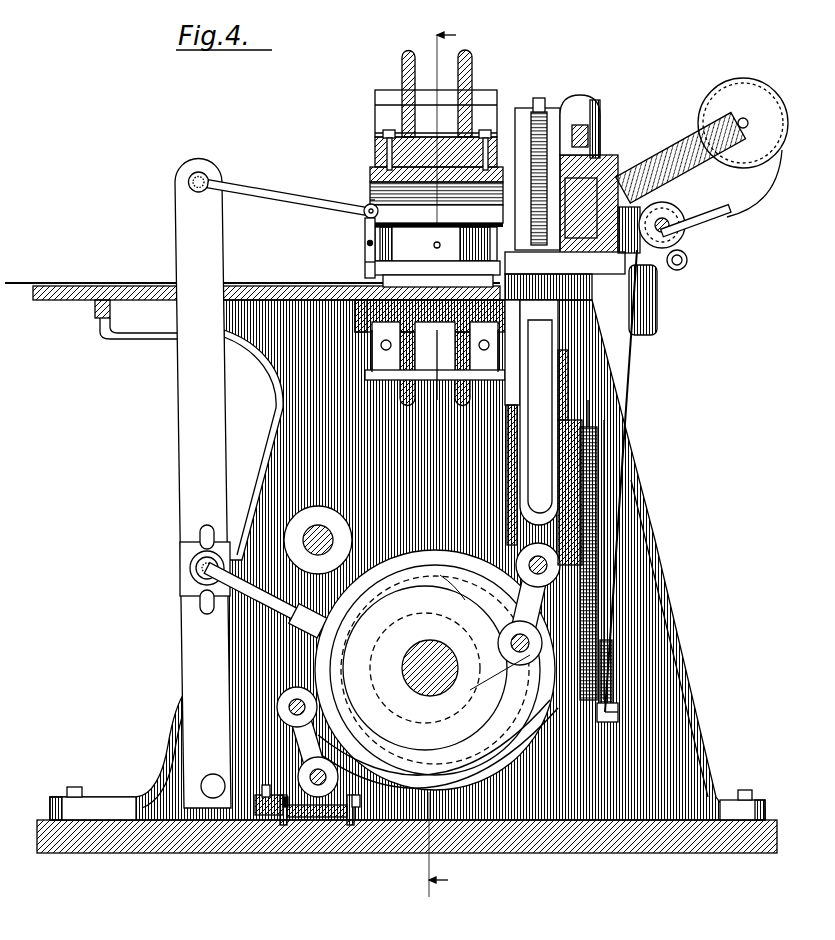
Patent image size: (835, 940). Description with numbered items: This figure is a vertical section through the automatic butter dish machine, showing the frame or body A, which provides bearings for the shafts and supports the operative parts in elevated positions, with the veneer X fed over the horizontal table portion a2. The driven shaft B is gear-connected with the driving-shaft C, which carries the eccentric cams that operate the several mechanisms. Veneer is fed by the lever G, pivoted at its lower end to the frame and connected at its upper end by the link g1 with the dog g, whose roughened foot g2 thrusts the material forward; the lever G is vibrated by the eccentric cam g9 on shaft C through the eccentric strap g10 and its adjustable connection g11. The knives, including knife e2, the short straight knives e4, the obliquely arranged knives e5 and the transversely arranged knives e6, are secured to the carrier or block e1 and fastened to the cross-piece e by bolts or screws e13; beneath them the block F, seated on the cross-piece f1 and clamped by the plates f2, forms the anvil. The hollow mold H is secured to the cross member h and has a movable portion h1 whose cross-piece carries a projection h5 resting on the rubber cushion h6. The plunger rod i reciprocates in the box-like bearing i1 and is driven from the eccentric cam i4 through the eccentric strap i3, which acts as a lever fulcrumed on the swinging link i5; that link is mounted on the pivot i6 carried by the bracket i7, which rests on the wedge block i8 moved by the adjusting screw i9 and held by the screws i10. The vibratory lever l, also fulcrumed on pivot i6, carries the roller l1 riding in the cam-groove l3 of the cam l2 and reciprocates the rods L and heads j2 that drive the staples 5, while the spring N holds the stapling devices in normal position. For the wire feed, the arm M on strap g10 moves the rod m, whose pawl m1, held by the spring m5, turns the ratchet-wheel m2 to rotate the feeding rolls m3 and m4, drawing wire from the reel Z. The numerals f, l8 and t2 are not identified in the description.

The frame or body A is at (320, 407).
The veneer X is at (27, 280).
The horizontal table portion a2 is at (158, 300).
The lever G is at (176, 230).
The adjustable connection g11 is at (280, 623).
The eccentric cam g9 is at (335, 603).
The eccentric strap i3 is at (330, 625).
The link g1 is at (242, 180).
The driven shaft B is at (323, 527).
The driving-shaft C is at (430, 692).
The vibratory lever l is at (455, 765).
The box-like bearing i1 is at (548, 560).
The plunger rod i is at (565, 555).
The swinging link i5 is at (268, 795).
The pivot or axis i6 is at (320, 785).
The block or bracket i7 is at (340, 820).
The wedge block i8 is at (292, 810).
The adjusting screw i9 is at (258, 800).
The screws i10 is at (264, 788).
The eccentric cam i4 is at (402, 620).
The eccentric strap g10 is at (450, 583).
The jaw f is at (400, 360).
The cross-piece f1 is at (376, 328).
The plates f2 is at (475, 380).
The short straight knives e4 is at (362, 308).
The transversely arranged knives e6 is at (437, 375).
The block F is at (443, 100).
The cross-piece e is at (404, 68).
The bolts or screws e13 is at (383, 133).
The staples 5 is at (438, 462).
The knife e2 is at (436, 257).
The dog g is at (364, 215).
The carrier or block e1 is at (370, 200).
The foot g2 is at (365, 245).
The lug l8 is at (368, 270).
The cross member h is at (616, 175).
The movable portion h1 is at (598, 165).
The projection h5 is at (568, 125).
The rubber cushion or buffer h6 is at (585, 125).
The heads j2 is at (600, 105).
The upper die or hollow mold H is at (595, 280).
The obliquely arranged knives e5 is at (575, 300).
The rods L is at (585, 398).
The roller or projection l1 is at (572, 343).
The spring t2 is at (575, 590).
The spring N is at (598, 560).
The cam l2 is at (610, 640).
The cam-groove l3 is at (612, 677).
The spring m5 is at (628, 693).
The rod m is at (612, 540).
The arm M is at (603, 717).
The pawl or dog m1 is at (640, 213).
The reel Z is at (742, 82).
The ratchet-wheel m2 is at (685, 213).
The feeding roll m3 is at (700, 238).
The feeding roll m4 is at (688, 265).